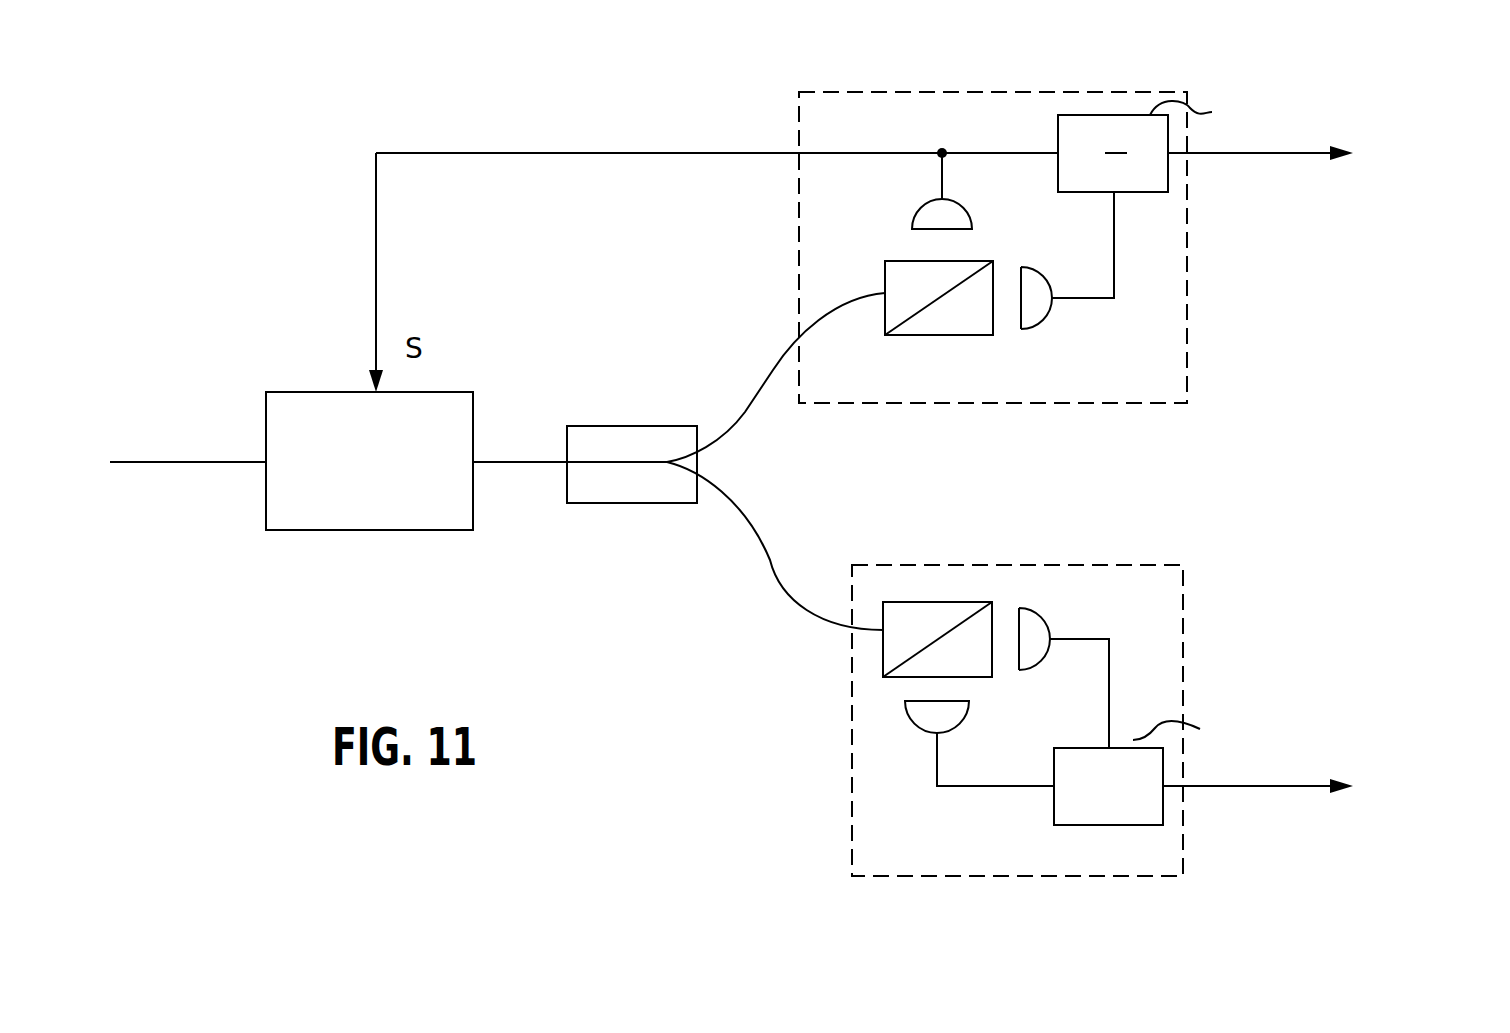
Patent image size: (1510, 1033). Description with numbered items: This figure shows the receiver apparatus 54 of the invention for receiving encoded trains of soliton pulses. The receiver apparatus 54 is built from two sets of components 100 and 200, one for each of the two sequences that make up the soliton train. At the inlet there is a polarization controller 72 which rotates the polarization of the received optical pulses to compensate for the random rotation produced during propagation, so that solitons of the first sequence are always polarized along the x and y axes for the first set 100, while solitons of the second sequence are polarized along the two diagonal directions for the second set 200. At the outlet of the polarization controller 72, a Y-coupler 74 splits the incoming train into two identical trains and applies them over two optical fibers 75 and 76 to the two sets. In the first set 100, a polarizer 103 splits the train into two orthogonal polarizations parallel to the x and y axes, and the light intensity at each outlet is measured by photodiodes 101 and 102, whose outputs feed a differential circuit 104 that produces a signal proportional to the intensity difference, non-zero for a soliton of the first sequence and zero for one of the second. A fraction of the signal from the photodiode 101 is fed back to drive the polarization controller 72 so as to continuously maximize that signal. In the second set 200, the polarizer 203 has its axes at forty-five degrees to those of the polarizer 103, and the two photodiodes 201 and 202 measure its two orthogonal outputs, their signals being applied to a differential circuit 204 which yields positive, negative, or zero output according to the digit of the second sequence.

The receiver apparatus 54 is at (258, 236).
The polarization controller 72 is at (383, 520).
The Y-coupler 74 is at (608, 490).
The optical fiber 75 is at (787, 337).
The optical fiber 76 is at (778, 583).
The first set of components 100 is at (1197, 277).
The photodiode 101 is at (932, 215).
The photodiode 102 is at (1038, 312).
The polarizer 103 is at (885, 320).
The differential circuit 104 is at (1118, 122).
The second set of components 200 is at (1202, 644).
The photodiode 201 is at (1035, 628).
The photodiode 202 is at (932, 717).
The polarizer 203 is at (920, 618).
The differential circuit 204 is at (1093, 800).